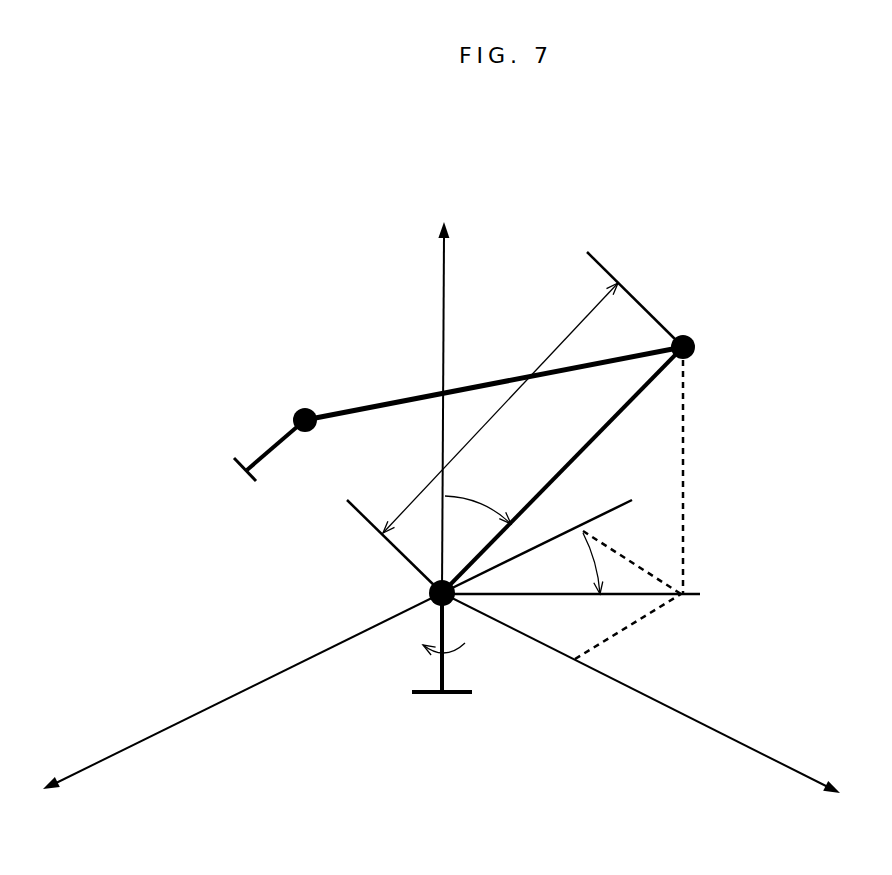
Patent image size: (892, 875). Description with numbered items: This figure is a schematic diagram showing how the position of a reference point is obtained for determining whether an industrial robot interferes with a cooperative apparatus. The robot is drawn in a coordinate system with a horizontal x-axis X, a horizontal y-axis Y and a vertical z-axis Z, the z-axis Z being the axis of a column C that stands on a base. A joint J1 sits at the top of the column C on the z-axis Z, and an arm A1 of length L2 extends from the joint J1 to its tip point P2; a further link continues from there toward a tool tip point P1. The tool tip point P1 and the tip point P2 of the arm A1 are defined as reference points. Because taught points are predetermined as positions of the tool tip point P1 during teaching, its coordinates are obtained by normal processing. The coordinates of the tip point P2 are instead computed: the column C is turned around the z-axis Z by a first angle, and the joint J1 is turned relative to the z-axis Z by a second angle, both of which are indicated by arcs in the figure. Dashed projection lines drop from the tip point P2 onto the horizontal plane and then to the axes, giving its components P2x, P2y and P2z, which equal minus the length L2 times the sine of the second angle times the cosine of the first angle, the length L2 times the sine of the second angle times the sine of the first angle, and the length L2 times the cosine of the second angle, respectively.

The x-axis X is at (239, 708).
The y-axis Y is at (643, 712).
The z-axis Z is at (444, 390).
The column C is at (445, 668).
The joint J1 is at (432, 608).
The arm A1 is at (598, 434).
The tool tip point P1 is at (240, 477).
The tip point of the arm P2 is at (695, 347).
The length of the arm L2 is at (515, 422).
The x coordinate of the reference point P2x is at (577, 660).
The y coordinate of the reference point P2y is at (573, 528).
The z coordinate of the reference point P2z is at (693, 352).